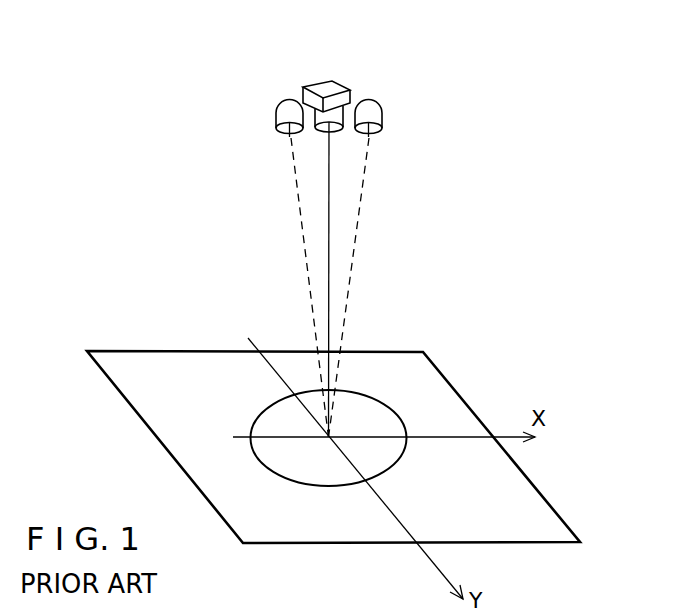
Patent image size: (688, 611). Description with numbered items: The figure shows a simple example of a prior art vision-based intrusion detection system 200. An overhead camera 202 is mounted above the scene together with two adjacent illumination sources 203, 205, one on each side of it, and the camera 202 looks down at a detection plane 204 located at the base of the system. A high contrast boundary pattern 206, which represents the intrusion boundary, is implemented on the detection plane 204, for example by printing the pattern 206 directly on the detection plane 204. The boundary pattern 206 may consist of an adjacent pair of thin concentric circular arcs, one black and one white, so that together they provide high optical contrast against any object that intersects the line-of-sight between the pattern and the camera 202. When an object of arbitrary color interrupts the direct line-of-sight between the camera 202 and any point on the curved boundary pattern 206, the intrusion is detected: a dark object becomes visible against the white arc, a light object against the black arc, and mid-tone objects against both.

The vision-based intrusion detection system 200 is at (478, 187).
The overhead camera 202 is at (344, 83).
The illumination source 203 is at (284, 108).
The detection plane 204 is at (525, 478).
The illumination source 205 is at (382, 102).
The boundary pattern 206 is at (400, 415).